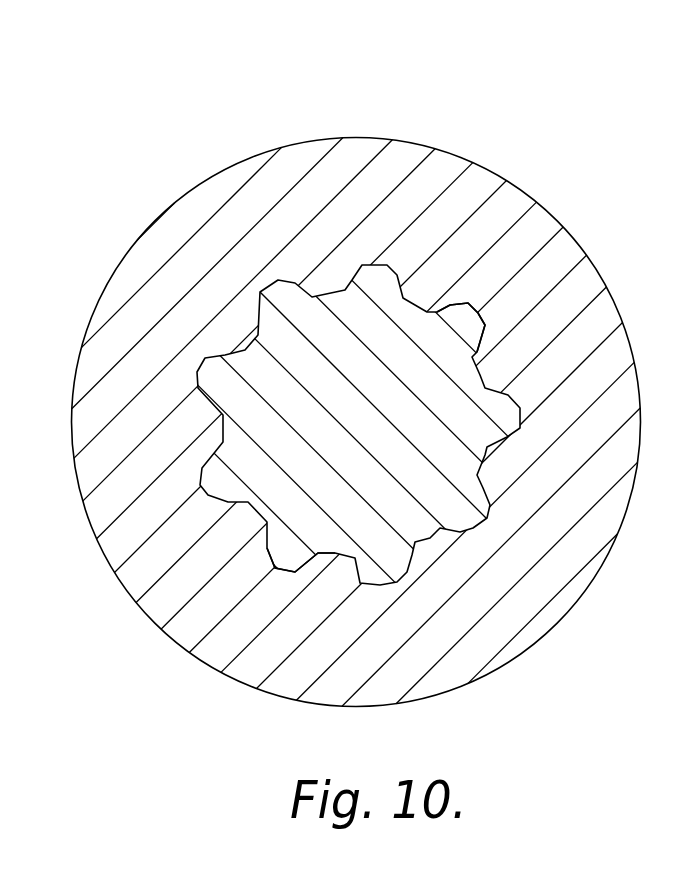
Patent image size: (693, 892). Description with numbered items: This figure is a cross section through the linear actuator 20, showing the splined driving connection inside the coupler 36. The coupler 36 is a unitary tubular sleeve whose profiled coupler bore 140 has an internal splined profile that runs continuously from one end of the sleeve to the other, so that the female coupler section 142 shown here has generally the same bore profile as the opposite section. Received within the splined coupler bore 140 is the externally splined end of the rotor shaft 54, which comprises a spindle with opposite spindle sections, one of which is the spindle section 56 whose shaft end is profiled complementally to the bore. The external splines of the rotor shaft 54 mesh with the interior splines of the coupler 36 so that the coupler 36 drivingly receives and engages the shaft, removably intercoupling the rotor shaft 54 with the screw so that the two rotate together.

The linear actuator 20 is at (360, 372).
The coupler 36 is at (537, 222).
The female coupler section 142 is at (273, 177).
The coupler bore 140 is at (452, 306).
The rotor shaft 54 is at (222, 483).
The spindle section 56 is at (318, 515).